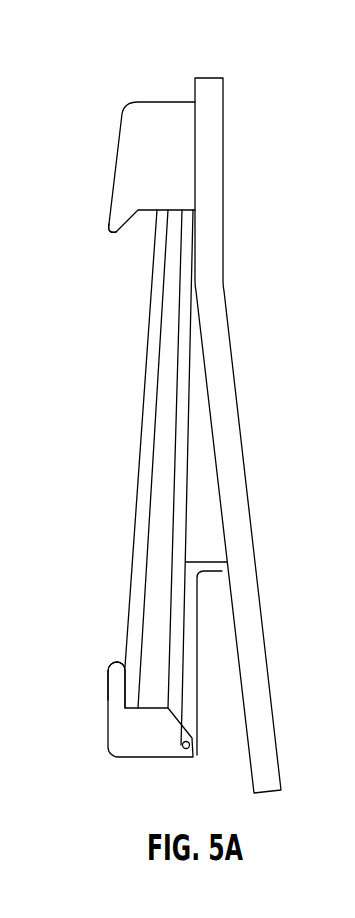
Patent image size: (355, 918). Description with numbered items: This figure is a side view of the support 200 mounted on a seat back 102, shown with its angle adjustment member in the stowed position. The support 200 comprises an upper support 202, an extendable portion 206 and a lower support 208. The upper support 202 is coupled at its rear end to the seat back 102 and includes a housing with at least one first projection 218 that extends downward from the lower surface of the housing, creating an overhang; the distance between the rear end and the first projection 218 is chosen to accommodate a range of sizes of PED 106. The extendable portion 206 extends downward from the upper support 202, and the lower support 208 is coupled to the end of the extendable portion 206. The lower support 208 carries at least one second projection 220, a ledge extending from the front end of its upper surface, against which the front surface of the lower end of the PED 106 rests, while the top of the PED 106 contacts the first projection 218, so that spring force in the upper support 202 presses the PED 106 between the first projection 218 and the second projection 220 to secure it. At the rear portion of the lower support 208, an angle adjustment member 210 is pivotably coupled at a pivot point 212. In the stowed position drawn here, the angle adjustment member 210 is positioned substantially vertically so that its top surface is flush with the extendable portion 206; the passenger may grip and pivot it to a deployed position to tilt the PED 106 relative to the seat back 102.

The support 200 is at (132, 74).
The seat back 102 is at (212, 138).
The upper support 202 is at (105, 142).
The first projection 218 is at (112, 233).
The PED 106 is at (147, 425).
The extendable portion 206 is at (180, 453).
The lower support 208 is at (153, 738).
The second projection 220 is at (125, 665).
The angle adjustment member 210 is at (190, 690).
The pivot point 212 is at (189, 749).